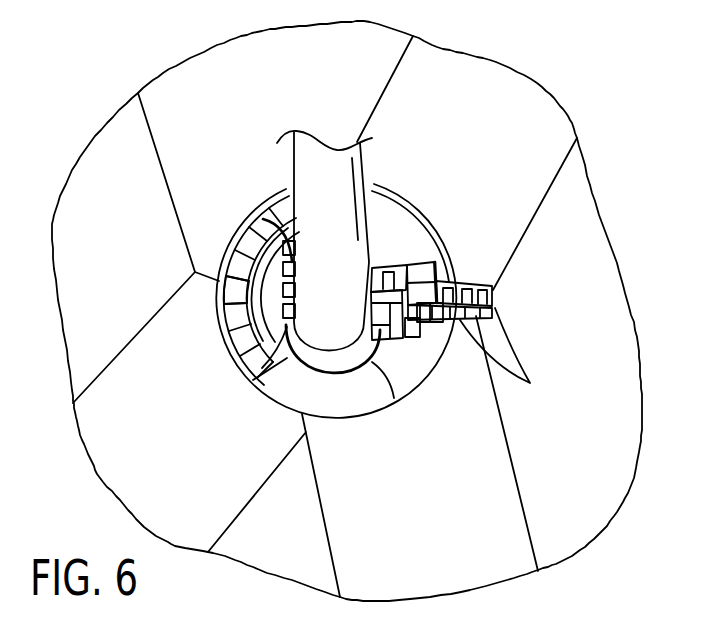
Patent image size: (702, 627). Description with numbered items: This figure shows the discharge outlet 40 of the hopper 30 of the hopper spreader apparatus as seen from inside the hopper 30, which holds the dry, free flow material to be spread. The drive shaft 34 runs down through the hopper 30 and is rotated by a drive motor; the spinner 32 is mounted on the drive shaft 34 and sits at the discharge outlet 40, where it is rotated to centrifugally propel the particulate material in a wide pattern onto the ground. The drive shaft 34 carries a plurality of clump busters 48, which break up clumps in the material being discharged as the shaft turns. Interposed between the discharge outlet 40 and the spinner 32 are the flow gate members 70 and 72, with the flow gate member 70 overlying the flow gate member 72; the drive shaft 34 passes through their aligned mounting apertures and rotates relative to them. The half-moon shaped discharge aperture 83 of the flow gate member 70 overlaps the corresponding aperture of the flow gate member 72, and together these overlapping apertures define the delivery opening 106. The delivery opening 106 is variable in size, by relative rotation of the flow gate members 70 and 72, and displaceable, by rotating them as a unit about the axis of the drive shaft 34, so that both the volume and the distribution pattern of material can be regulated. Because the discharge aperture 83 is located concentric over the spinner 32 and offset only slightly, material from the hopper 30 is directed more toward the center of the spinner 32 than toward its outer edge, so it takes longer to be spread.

The hopper 30 is at (595, 225).
The spinner 32 is at (268, 214).
The drive shaft 34 is at (292, 150).
The discharge outlet 40 is at (287, 394).
The clump busters 48 is at (467, 333).
The flow gate member 70 is at (409, 227).
The flow gate member 72 is at (290, 376).
The discharge aperture 83 is at (386, 380).
The delivery opening 106 is at (230, 275).